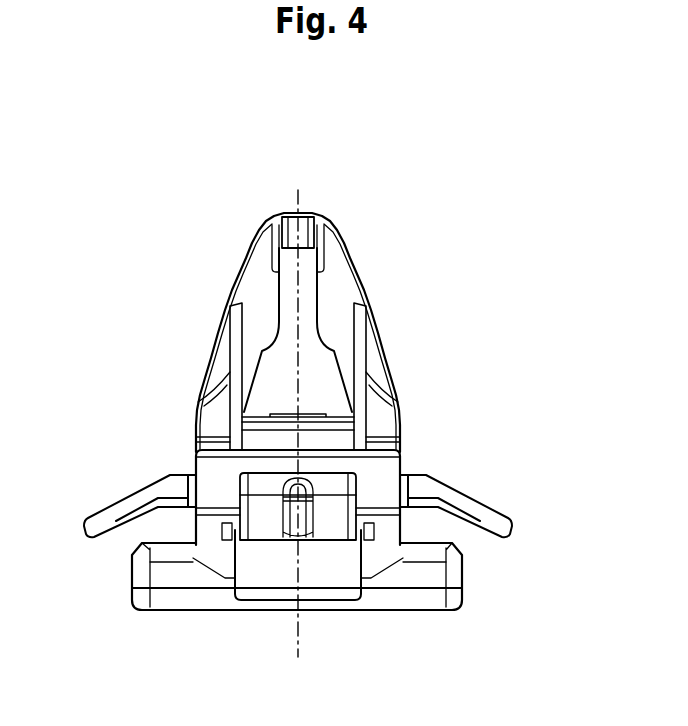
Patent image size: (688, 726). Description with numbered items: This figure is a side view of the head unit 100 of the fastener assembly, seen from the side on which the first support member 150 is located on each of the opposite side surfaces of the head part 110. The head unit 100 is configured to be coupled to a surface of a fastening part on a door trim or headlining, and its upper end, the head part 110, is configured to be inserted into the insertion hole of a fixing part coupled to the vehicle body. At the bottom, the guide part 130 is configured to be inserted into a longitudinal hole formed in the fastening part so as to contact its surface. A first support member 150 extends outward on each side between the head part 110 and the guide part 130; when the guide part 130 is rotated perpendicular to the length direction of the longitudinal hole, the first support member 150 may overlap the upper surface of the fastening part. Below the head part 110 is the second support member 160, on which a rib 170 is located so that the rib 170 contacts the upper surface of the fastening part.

The head unit 100 is at (431, 198).
The head part 110 is at (259, 222).
The guide part 130 is at (463, 577).
The first support member 150 is at (117, 500).
The second support member 160 is at (372, 473).
The rib 170 is at (263, 517).